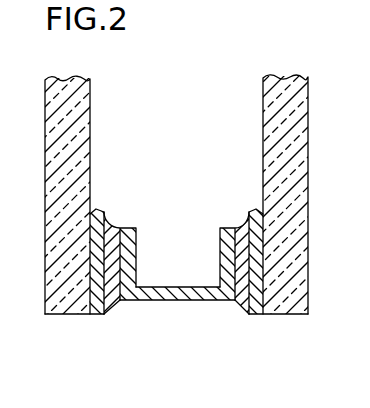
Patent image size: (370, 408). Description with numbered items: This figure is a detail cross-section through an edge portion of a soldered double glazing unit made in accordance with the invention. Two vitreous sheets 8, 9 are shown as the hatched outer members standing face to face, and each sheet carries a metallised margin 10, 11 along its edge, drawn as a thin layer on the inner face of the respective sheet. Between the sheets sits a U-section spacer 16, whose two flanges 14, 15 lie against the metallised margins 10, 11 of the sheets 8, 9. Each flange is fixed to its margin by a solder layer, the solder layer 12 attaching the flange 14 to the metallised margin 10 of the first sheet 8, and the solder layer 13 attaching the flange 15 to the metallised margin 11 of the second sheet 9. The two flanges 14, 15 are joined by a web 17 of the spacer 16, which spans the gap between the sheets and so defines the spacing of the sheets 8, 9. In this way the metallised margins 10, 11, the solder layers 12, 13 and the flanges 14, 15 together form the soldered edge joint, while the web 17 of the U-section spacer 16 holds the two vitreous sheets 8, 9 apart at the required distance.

The vitreous sheet 8 is at (82, 113).
The vitreous sheet 9 is at (272, 112).
The metallised margin 10 is at (96, 212).
The metallised margin 11 is at (254, 212).
The solder layer 12 is at (112, 299).
The solder layer 13 is at (229, 302).
The flange 14 is at (128, 240).
The flange 15 is at (223, 243).
The U-section spacer 16 is at (181, 311).
The web 17 is at (178, 286).